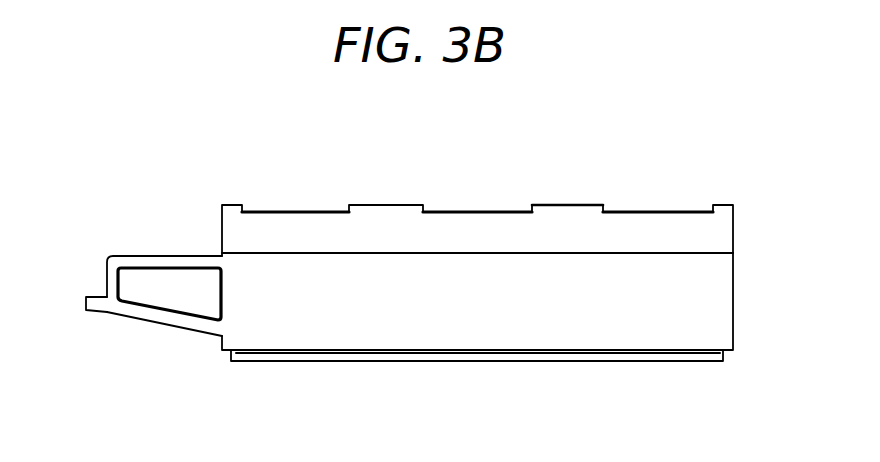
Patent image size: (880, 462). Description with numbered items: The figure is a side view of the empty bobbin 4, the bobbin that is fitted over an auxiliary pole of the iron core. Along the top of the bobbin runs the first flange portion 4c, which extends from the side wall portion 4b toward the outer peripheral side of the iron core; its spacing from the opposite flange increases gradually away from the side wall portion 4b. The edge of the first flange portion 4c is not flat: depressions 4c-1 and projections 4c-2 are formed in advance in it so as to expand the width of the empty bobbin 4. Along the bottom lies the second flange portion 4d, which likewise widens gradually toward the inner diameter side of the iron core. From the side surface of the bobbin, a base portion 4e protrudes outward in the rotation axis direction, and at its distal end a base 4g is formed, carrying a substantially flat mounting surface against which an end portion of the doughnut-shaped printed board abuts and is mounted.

The empty bobbin 4 is at (743, 176).
The side wall portion 4b is at (707, 303).
The first flange portion 4c is at (707, 233).
The depression 4c-1 is at (482, 211).
The projection 4c-2 is at (570, 205).
The second flange portion 4d is at (550, 354).
The base portion 4e is at (160, 257).
The base 4g is at (92, 297).